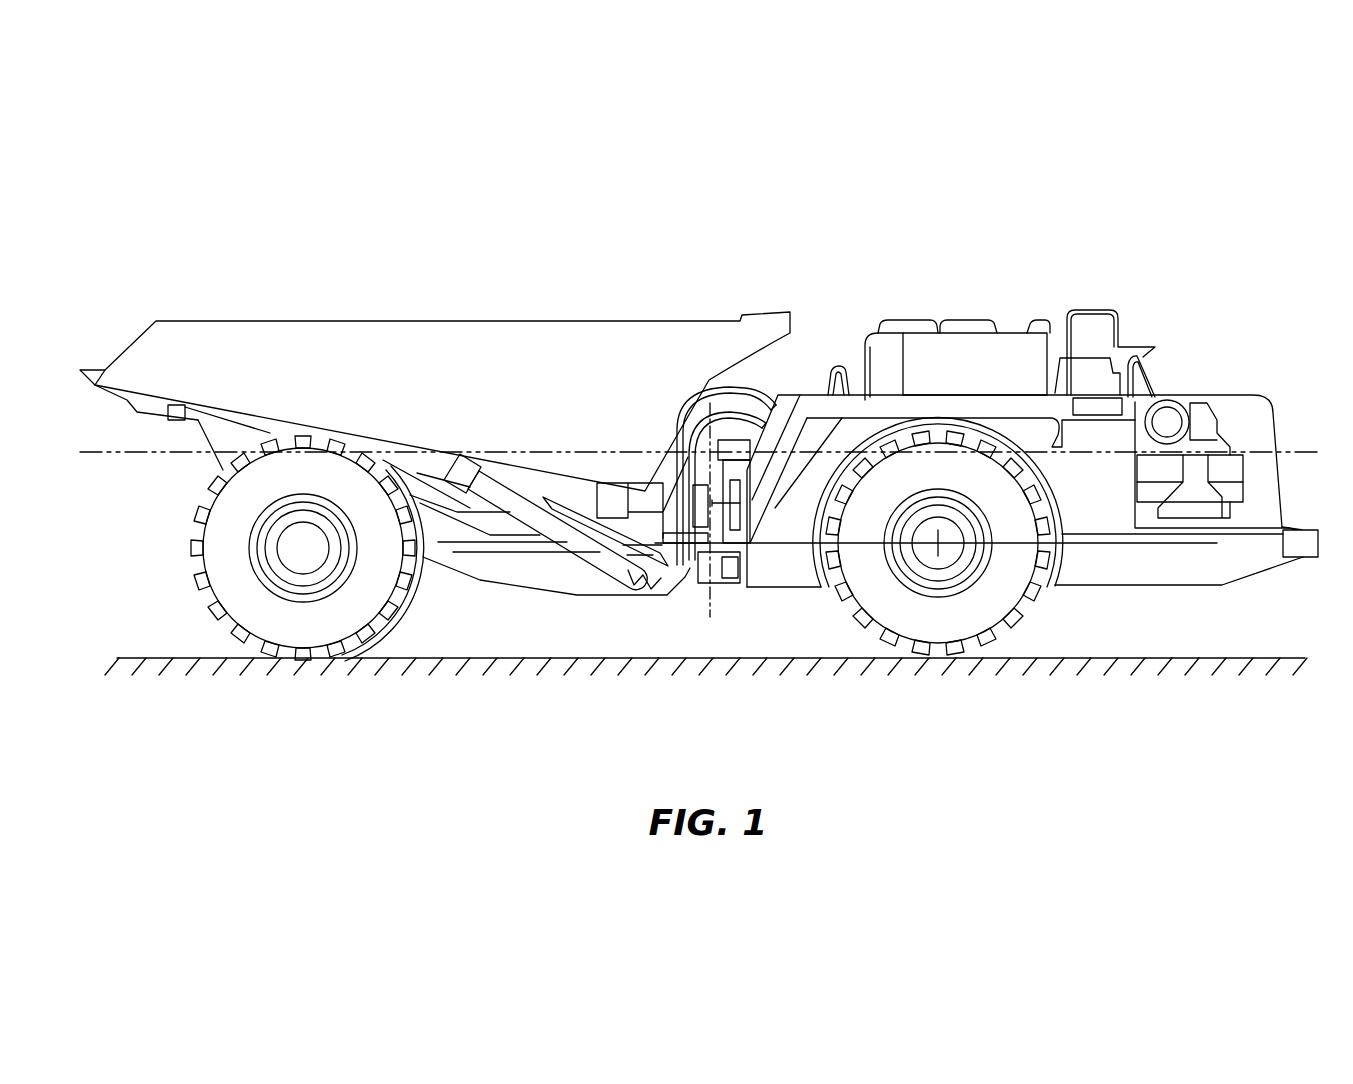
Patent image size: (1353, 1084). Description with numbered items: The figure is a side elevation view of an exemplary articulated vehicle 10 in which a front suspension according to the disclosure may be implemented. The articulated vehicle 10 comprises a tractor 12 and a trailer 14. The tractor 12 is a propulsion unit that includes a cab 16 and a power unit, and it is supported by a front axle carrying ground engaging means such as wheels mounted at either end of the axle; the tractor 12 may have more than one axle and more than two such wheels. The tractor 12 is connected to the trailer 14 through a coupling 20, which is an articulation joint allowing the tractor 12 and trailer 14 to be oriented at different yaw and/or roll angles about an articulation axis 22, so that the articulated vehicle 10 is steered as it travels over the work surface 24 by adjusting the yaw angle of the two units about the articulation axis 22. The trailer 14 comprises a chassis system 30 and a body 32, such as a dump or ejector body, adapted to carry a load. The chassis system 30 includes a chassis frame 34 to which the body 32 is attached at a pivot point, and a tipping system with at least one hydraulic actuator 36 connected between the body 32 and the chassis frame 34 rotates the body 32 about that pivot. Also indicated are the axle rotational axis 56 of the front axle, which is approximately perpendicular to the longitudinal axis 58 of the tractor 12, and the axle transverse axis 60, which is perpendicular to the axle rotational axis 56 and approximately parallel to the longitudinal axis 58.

The articulated vehicle 10 is at (962, 222).
The tractor 12 is at (1193, 343).
The trailer 14 is at (449, 245).
The cab 16 is at (1128, 348).
The coupling 20 is at (697, 582).
The articulation axis 22 is at (710, 605).
The work surface 24 is at (1222, 657).
The chassis system 30 is at (648, 622).
The body 32 is at (316, 318).
The chassis frame 34 is at (523, 568).
The hydraulic actuator 36 is at (485, 480).
The axle rotational axis 56 is at (942, 555).
The longitudinal axis 58 is at (1302, 450).
The axle transverse axis 60 is at (1170, 560).